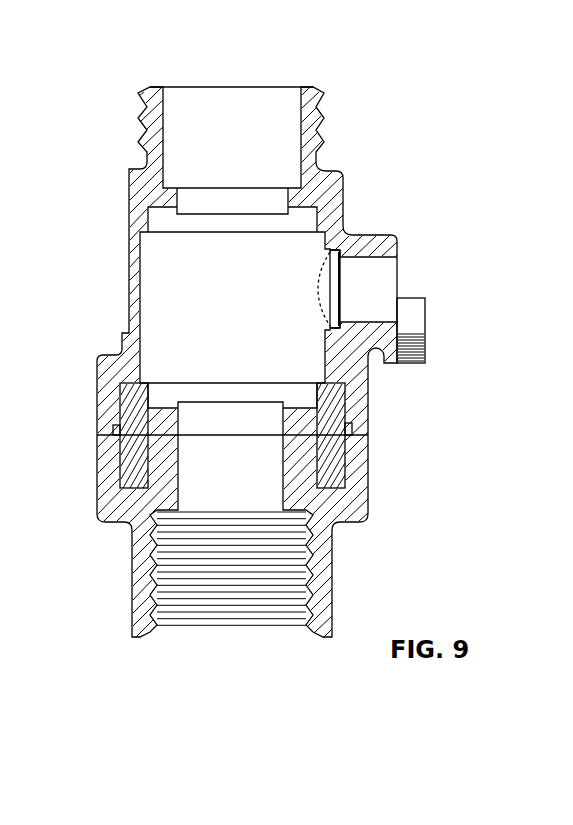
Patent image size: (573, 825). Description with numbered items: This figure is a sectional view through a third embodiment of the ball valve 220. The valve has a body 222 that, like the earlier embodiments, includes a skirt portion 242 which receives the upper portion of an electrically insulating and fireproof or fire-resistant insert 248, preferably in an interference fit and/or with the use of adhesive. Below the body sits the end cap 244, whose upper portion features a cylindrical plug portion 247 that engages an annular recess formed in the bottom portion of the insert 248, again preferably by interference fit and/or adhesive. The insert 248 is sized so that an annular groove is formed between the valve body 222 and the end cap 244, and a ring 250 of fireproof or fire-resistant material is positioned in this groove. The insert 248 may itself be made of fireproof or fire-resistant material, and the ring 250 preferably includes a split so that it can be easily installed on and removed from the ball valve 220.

The ball valve 220 is at (146, 64).
The valve body 222 is at (129, 260).
The skirt portion 242 is at (97, 403).
The end cap 244 is at (132, 583).
The cylindrical plug portion 247 is at (316, 472).
The insert 248 is at (135, 459).
The ring 250 is at (368, 468).